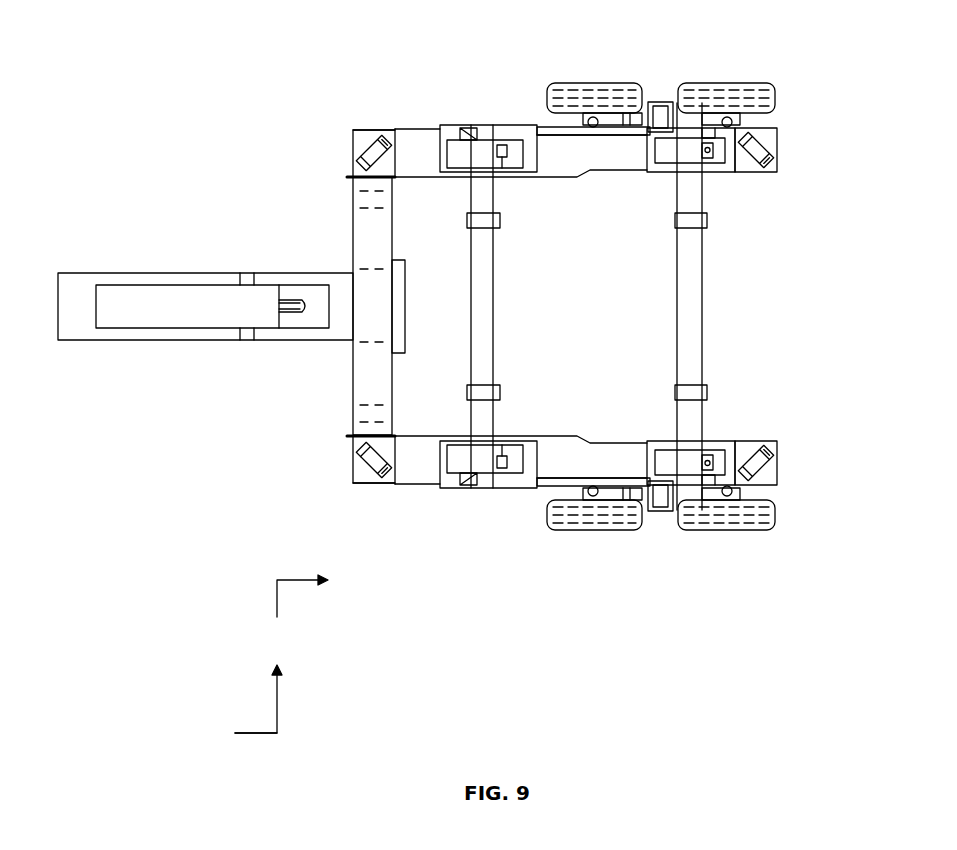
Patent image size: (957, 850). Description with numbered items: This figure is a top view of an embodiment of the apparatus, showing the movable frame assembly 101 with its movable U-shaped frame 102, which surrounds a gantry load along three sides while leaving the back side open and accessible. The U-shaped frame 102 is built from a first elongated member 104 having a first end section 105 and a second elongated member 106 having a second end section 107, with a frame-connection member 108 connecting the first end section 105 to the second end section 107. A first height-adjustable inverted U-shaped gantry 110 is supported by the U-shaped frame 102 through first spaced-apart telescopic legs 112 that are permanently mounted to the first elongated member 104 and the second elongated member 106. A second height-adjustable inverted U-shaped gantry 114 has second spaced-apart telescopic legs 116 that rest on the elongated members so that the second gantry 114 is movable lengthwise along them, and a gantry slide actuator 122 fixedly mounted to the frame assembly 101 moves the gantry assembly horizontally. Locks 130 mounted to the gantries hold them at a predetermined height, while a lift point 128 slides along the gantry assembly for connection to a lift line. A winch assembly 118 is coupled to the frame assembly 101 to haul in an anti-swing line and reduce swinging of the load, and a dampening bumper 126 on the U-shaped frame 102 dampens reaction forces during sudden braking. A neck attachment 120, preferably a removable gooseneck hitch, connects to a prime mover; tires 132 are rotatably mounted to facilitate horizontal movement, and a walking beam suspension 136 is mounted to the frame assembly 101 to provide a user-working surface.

The movable frame assembly 101 is at (227, 733).
The movable U-shaped frame 102 is at (265, 681).
The first elongated member 104 is at (329, 593).
The first end section 105 is at (355, 482).
The second elongated member 106 is at (418, 128).
The second end section 107 is at (358, 130).
The frame-connection member 108 is at (352, 240).
The first height-adjustable inverted U-shaped gantry 110 is at (677, 320).
The first spaced-apart telescopic legs 112 is at (665, 150).
The second height-adjustable inverted U-shaped gantry 114 is at (493, 300).
The second spaced-apart telescopic legs 116 is at (460, 145).
The winch assembly 118 is at (352, 150).
The neck attachment 120 is at (92, 273).
The gantry slide actuator 122 is at (600, 137).
The dampening bumper 126 is at (405, 352).
The lift point 128 is at (500, 220).
The locks 130 is at (508, 150).
The tires 132 is at (570, 83).
The walking beam suspension 136 is at (660, 508).